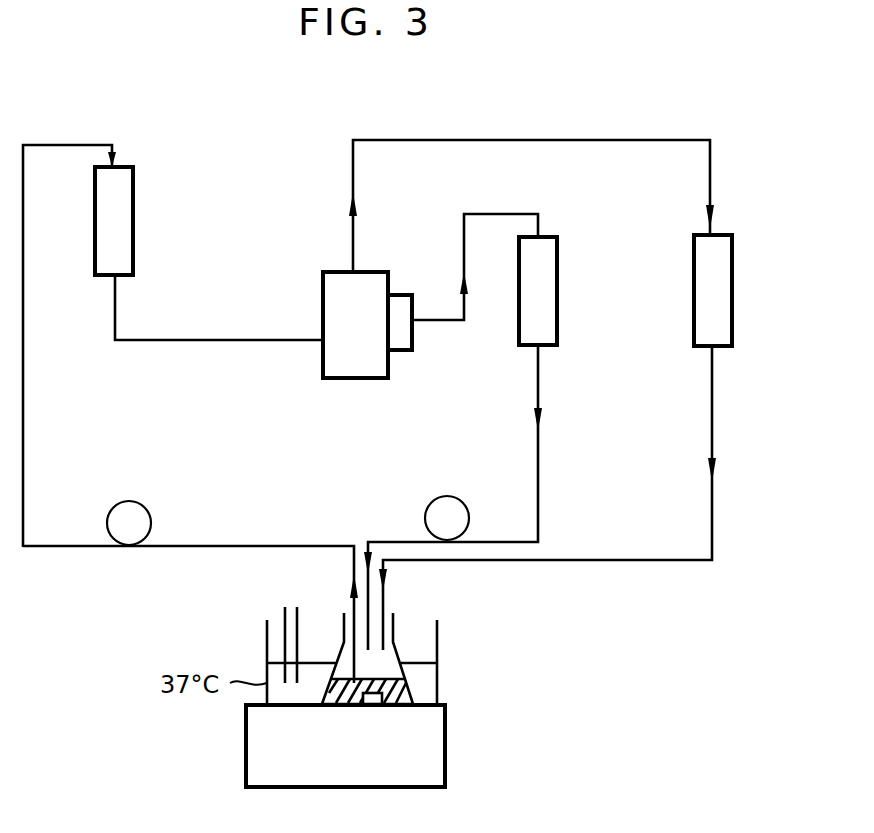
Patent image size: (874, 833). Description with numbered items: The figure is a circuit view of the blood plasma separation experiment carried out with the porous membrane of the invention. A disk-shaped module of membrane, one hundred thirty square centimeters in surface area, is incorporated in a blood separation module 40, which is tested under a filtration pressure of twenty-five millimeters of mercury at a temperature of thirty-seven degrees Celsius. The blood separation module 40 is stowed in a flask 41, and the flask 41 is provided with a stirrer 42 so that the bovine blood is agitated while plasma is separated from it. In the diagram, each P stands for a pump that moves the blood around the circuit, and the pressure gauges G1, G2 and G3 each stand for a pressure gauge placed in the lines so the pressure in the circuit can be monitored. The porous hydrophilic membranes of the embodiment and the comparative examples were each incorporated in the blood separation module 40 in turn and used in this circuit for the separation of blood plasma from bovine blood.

The blood separation module 40 is at (363, 378).
The flask 41 is at (405, 686).
The stirrer 42 is at (262, 750).
The pressure gauge G1 is at (120, 163).
The pressure gauge G2 is at (543, 235).
The pressure gauge G3 is at (717, 229).
The pump P is at (288, 520).